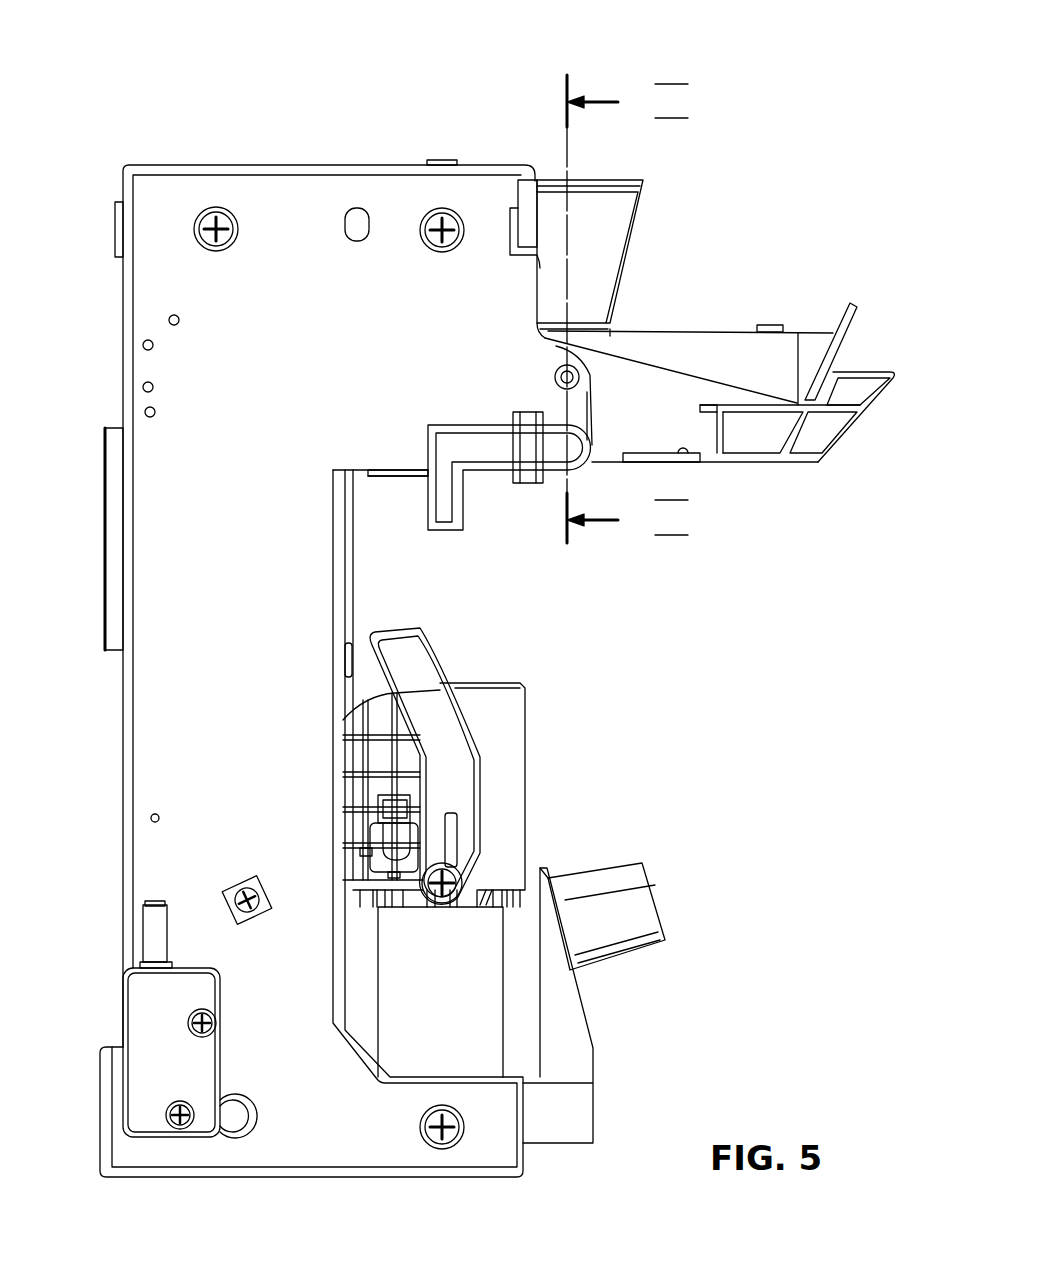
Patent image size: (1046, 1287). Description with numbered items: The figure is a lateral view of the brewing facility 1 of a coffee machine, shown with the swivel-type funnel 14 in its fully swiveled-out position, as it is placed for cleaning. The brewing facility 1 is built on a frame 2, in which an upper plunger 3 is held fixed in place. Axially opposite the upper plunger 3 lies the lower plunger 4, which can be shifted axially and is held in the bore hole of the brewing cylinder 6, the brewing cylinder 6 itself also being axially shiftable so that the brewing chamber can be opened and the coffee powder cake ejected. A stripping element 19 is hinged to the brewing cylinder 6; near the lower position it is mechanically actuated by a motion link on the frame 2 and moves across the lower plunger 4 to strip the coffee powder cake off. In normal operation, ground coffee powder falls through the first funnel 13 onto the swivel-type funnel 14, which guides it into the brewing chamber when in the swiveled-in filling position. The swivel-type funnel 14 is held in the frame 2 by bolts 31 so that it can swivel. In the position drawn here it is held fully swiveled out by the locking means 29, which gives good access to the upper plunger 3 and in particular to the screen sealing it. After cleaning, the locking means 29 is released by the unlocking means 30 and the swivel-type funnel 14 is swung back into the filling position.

The brewing facility 1 is at (127, 118).
The frame 2 is at (150, 752).
The upper plunger 3 is at (395, 475).
The lower plunger 4 is at (488, 1012).
The brewing cylinder 6 is at (515, 728).
The first funnel 13 is at (623, 212).
The swivel-type funnel 14 is at (728, 345).
The stripping element 19 is at (412, 665).
The locking means 29 is at (612, 474).
The unlocking means 30 is at (477, 487).
The bolts 31 is at (553, 375).